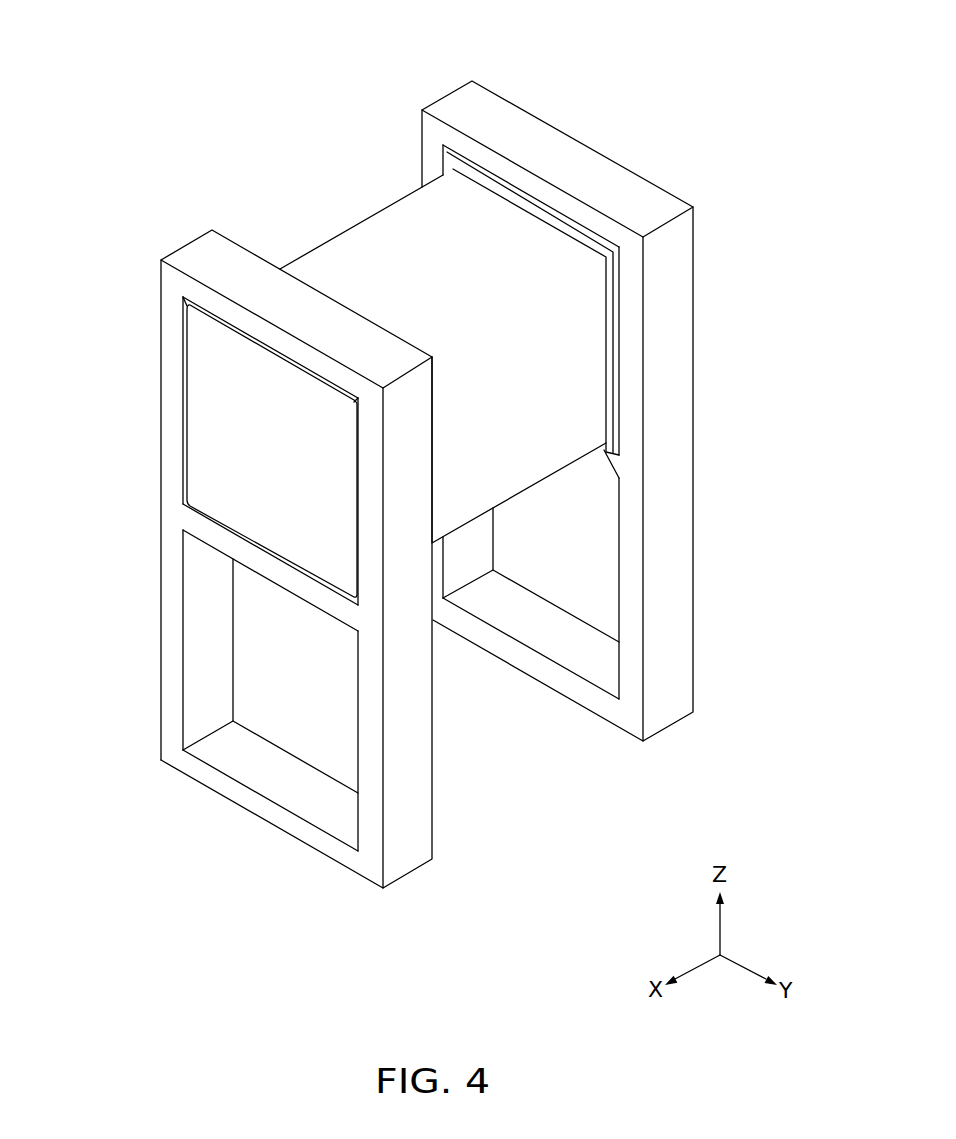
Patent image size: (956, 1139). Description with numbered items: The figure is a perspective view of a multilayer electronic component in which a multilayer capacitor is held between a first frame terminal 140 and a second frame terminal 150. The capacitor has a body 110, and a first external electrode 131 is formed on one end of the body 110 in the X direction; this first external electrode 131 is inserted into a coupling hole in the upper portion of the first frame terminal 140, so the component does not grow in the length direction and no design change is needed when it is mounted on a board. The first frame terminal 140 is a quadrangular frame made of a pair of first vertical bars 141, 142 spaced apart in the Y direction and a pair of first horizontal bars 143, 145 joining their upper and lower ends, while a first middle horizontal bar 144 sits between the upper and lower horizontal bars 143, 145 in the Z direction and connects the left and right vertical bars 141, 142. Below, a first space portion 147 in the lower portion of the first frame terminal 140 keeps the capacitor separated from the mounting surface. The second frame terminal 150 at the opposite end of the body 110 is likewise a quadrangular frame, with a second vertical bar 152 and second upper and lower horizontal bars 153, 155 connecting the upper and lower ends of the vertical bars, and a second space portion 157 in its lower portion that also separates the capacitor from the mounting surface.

The body 110 is at (363, 227).
The first external electrode 131 is at (200, 432).
The first frame terminal 140 is at (310, 509).
The first vertical bar 141 is at (195, 598).
The first vertical bar 142 is at (423, 765).
The first upper horizontal bar 143 is at (247, 260).
The first middle horizontal bar 144 is at (223, 543).
The first lower horizontal bar 145 is at (267, 785).
The first space portion 147 is at (288, 672).
The second frame terminal 150 is at (591, 436).
The second vertical bar 152 is at (680, 357).
The second upper horizontal bar 153 is at (562, 150).
The second lower horizontal bar 155 is at (597, 673).
The second space portion 157 is at (560, 553).